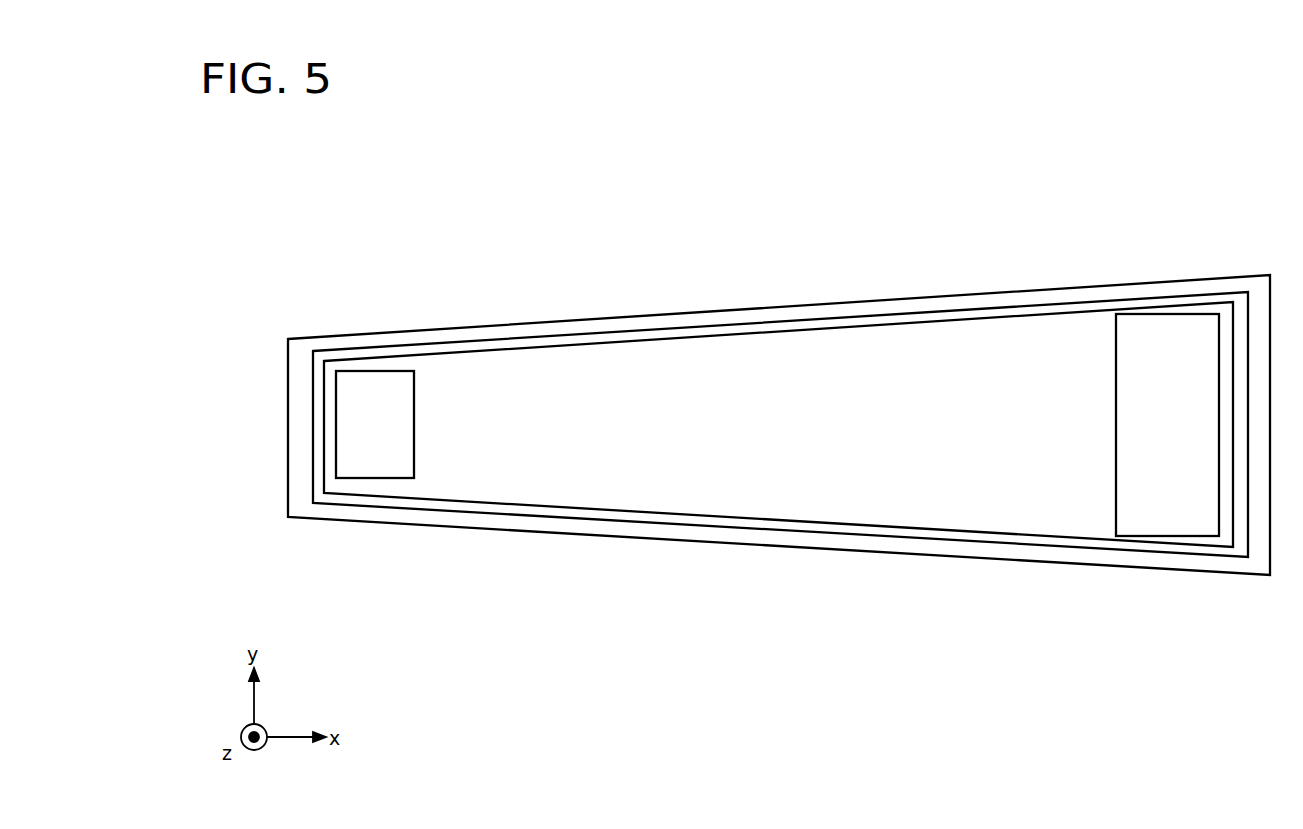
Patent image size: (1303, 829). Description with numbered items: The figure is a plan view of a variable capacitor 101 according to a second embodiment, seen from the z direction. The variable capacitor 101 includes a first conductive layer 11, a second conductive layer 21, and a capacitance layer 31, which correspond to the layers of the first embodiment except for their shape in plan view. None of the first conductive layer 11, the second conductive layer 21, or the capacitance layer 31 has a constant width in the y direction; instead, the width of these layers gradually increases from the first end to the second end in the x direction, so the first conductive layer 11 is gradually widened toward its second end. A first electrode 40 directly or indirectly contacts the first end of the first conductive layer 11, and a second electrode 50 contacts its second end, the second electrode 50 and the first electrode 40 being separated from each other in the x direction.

The variable capacitor 101 is at (1141, 151).
The first conductive layer 11 is at (517, 360).
The second conductive layer 21 is at (623, 327).
The capacitance layer 31 is at (563, 344).
The first electrode 40 is at (372, 383).
The second electrode 50 is at (1169, 328).